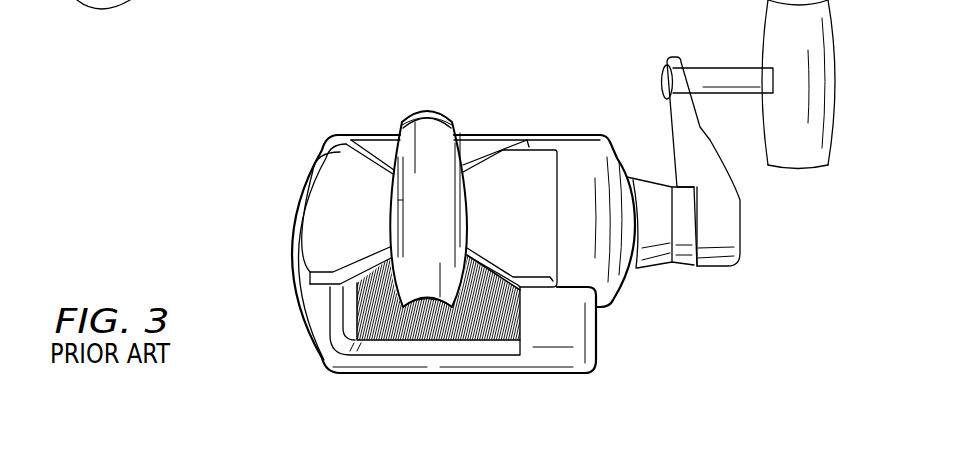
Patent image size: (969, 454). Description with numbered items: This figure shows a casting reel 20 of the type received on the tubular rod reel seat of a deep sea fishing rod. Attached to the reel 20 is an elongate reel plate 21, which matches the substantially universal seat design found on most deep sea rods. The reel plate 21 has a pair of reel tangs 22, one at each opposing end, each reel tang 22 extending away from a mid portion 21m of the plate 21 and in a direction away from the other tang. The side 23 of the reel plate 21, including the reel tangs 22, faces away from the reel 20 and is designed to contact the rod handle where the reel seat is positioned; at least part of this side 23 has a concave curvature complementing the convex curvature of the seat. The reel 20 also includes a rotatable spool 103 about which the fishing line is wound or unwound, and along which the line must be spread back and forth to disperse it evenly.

The casting reel 20 is at (281, 116).
The reel plate 21 is at (443, 255).
The mid portion 21m is at (428, 208).
The reel tang 22 is at (428, 122).
The side 23 is at (427, 182).
The spool 103 is at (374, 295).